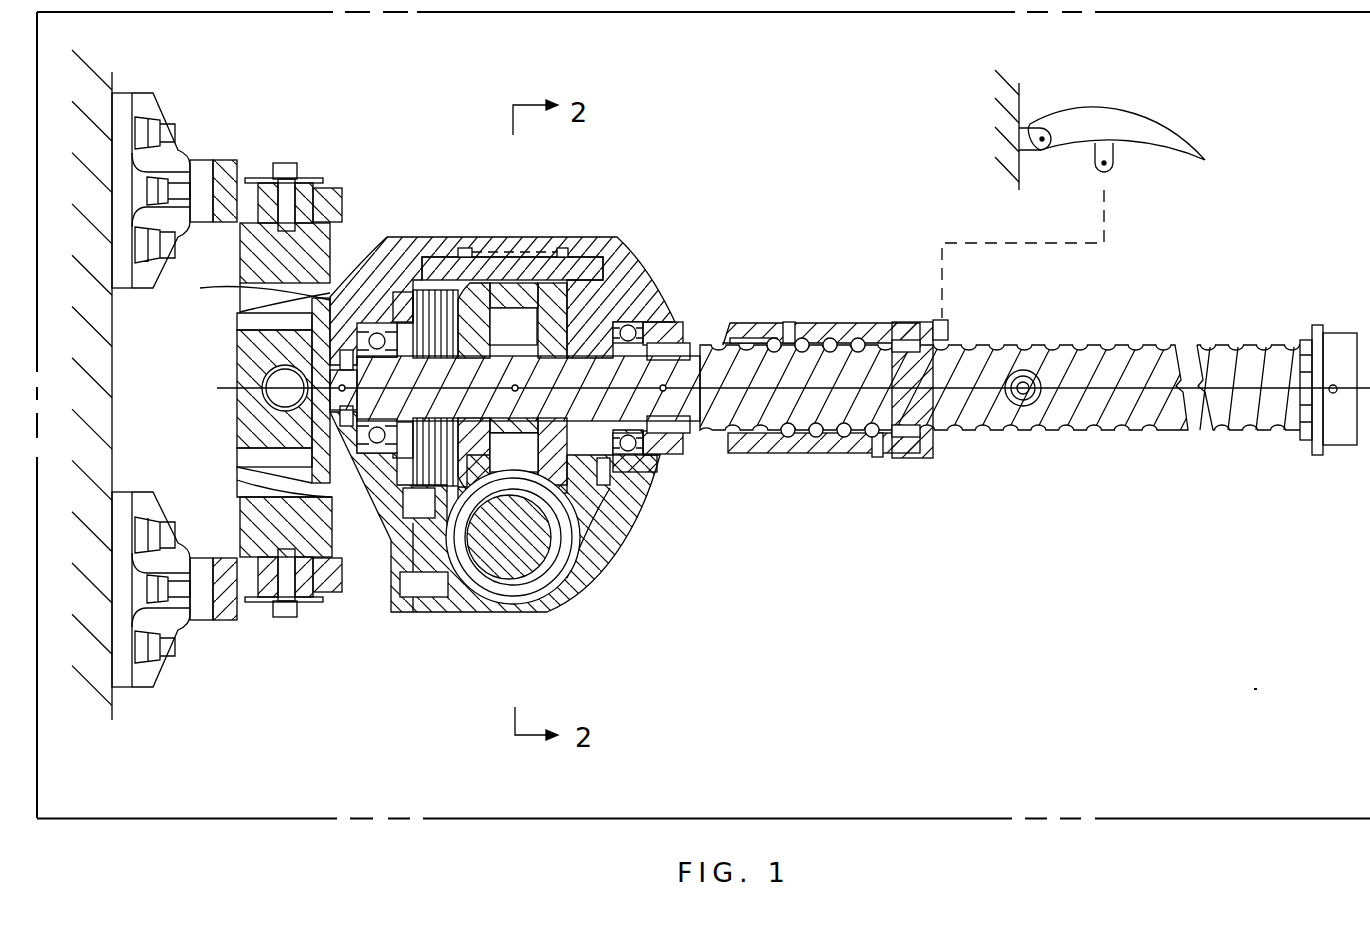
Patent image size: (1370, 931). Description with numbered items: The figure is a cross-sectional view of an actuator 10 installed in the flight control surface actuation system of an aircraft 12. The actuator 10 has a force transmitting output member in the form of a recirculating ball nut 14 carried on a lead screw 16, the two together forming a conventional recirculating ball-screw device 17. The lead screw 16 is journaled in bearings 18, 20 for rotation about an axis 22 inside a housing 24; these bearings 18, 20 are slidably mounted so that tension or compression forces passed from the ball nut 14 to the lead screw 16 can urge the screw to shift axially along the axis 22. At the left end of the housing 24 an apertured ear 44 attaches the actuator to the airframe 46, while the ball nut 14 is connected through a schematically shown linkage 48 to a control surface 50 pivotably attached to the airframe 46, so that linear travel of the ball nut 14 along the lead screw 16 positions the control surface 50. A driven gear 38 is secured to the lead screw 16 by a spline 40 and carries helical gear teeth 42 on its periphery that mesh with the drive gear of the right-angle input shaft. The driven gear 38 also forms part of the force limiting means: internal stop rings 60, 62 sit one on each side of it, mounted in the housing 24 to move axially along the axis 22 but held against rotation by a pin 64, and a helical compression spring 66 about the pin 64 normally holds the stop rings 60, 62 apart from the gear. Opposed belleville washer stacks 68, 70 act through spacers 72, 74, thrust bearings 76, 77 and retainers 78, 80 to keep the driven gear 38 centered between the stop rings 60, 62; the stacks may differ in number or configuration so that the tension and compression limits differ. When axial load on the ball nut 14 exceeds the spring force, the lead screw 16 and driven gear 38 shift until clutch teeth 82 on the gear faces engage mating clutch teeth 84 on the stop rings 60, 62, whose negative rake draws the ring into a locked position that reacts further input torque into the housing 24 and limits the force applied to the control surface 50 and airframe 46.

The actuator 10 is at (667, 152).
The aircraft 12 is at (1030, 818).
The recirculating ball nut 14 is at (920, 460).
The lead screw 16 is at (1090, 434).
The recirculating ball-screw device 17 is at (822, 480).
The bearing 18 is at (640, 312).
The bearing 20 is at (260, 285).
The axis 22 is at (1163, 400).
The housing 24 is at (640, 322).
The driven gear 38 is at (510, 578).
The spline 40 is at (535, 515).
The helical gear teeth 42 is at (512, 302).
The apertured ear 44 is at (268, 383).
The airframe 46 is at (112, 122).
The linkage 48 is at (1067, 243).
The control surface 50 is at (1182, 157).
The internal stop ring 60 is at (575, 285).
The internal stop ring 62 is at (410, 295).
The pin 64 is at (440, 290).
The helical compression spring 66 is at (495, 262).
The belleville washer stack 68 is at (420, 540).
The belleville washer stack 70 is at (607, 478).
The spacer 72 is at (450, 560).
The spacer 74 is at (622, 318).
The thrust bearing 76 is at (410, 458).
The thrust bearing 77 is at (592, 472).
The retainer 78 is at (313, 413).
The retainer 80 is at (665, 447).
The clutch teeth 82 is at (458, 255).
The clutch teeth 84 is at (548, 583).